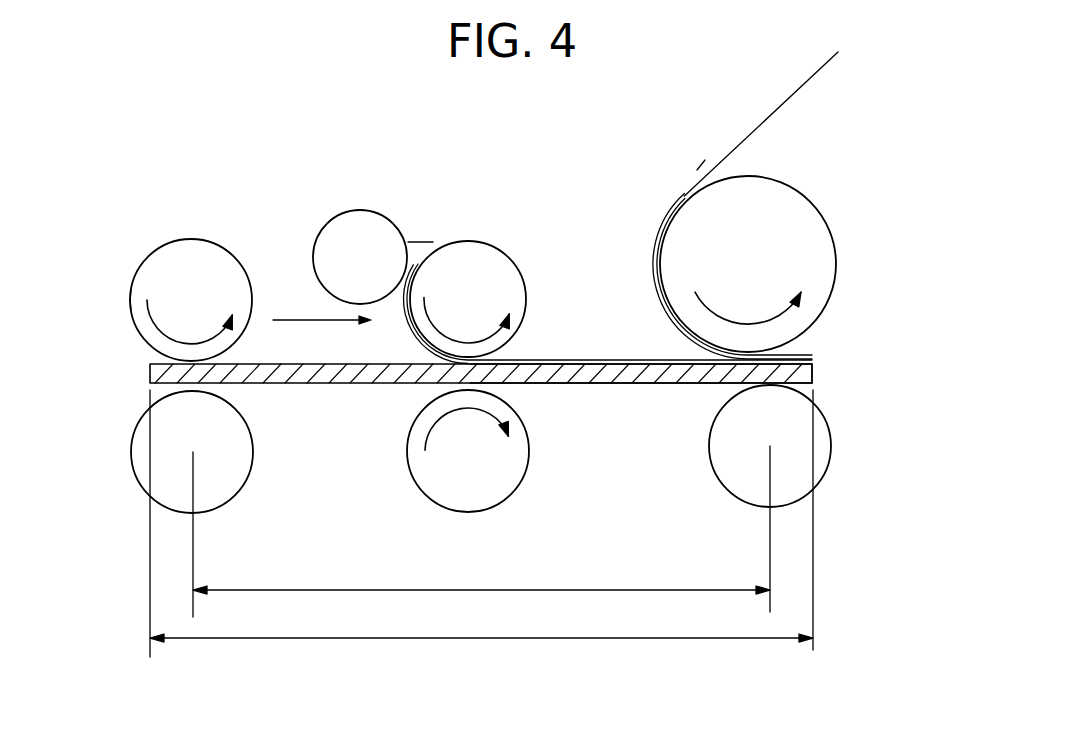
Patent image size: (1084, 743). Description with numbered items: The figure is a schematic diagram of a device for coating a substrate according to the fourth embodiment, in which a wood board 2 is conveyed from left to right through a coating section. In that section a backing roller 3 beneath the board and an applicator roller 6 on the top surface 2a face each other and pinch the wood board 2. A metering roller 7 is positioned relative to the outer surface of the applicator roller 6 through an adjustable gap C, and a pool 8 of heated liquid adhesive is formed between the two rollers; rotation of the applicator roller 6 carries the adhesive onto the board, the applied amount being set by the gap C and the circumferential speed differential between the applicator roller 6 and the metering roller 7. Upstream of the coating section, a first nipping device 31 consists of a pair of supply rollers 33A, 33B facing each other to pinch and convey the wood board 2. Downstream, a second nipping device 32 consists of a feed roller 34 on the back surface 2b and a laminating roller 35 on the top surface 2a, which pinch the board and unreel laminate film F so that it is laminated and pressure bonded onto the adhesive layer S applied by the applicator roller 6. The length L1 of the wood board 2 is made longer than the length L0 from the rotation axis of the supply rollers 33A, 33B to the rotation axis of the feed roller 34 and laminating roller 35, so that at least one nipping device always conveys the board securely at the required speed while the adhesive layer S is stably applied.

The wood board 2 is at (812, 387).
The top surface 2a is at (564, 360).
The back surface 2b is at (600, 385).
The backing roller 3 is at (417, 484).
The applicator roller 6 is at (507, 249).
The metering roller 7 is at (318, 250).
The pool 8 is at (430, 242).
The first nipping device 31 is at (148, 232).
The second nipping device 32 is at (690, 152).
The supply roller 33A is at (132, 460).
The supply roller 33B is at (132, 312).
The feed roller 34 is at (832, 447).
The laminating roller 35 is at (840, 260).
The gap C is at (394, 307).
The adhesive layer S is at (597, 358).
The laminate film F is at (820, 68).
The length from supply roller axis to feed roller axis L0 is at (481, 531).
The length of the wood board L1 is at (481, 523).